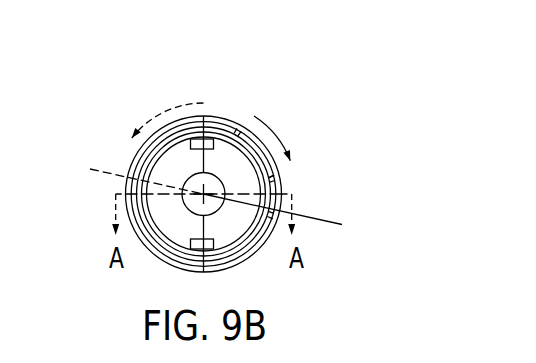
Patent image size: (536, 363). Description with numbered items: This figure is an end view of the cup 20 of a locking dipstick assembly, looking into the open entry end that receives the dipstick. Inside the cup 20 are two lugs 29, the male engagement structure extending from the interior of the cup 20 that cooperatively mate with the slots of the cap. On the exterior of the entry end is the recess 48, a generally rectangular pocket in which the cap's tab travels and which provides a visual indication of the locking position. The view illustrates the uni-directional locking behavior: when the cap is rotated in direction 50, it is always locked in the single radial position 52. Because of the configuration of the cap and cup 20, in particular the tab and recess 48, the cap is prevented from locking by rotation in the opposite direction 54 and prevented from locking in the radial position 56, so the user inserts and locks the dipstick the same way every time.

The cup 20 is at (108, 113).
The lugs 29 is at (207, 143).
The recess 48 is at (274, 179).
The direction 50 is at (279, 131).
The radial position 52 is at (340, 222).
The direction 54 is at (158, 111).
The radial position 56 is at (104, 169).